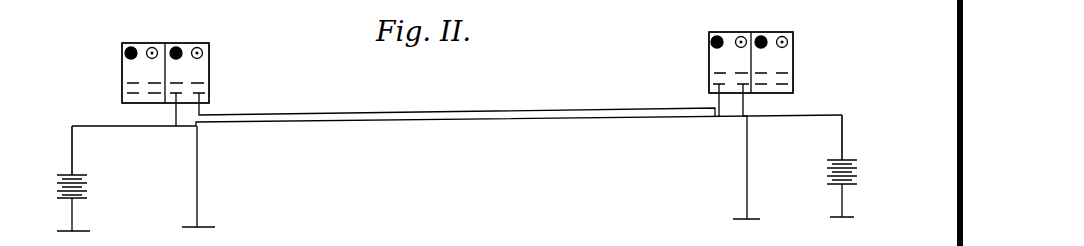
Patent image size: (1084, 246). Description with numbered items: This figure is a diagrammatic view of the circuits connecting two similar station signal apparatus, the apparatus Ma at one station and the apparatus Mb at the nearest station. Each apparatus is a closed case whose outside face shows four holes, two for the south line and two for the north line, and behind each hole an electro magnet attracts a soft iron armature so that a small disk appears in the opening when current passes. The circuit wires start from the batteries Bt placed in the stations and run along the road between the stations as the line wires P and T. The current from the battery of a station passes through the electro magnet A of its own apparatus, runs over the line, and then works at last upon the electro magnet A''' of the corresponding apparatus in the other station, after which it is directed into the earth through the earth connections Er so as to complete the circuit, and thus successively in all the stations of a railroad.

The signal apparatus Ma is at (163, 58).
The signal apparatus Mb is at (748, 46).
The electro magnet A''' is at (181, 73).
The electro magnet A is at (733, 62).
The line wire P is at (457, 104).
The line wire T is at (457, 111).
The battery Bt is at (86, 186).
The earth connection Er is at (455, 165).